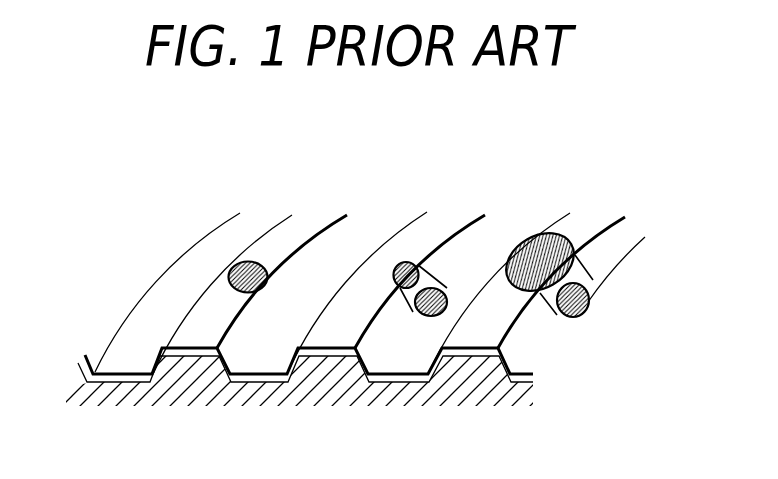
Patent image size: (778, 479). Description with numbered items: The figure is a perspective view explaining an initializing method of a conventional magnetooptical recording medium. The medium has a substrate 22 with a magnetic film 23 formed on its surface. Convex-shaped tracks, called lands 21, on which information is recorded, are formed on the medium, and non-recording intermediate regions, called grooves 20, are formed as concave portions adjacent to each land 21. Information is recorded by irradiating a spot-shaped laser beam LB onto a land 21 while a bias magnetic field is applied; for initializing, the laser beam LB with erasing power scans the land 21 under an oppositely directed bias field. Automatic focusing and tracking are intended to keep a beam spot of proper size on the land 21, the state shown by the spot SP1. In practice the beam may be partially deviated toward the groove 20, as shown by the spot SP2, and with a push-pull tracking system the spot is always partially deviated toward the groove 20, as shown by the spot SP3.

The groove 20 is at (136, 336).
The land 21 is at (200, 319).
The substrate 22 is at (455, 380).
The magnetic film 23 is at (478, 353).
The laser beam LB is at (393, 262).
The spot SP1 is at (248, 262).
The spot SP2 is at (408, 262).
The spot SP3 is at (548, 236).